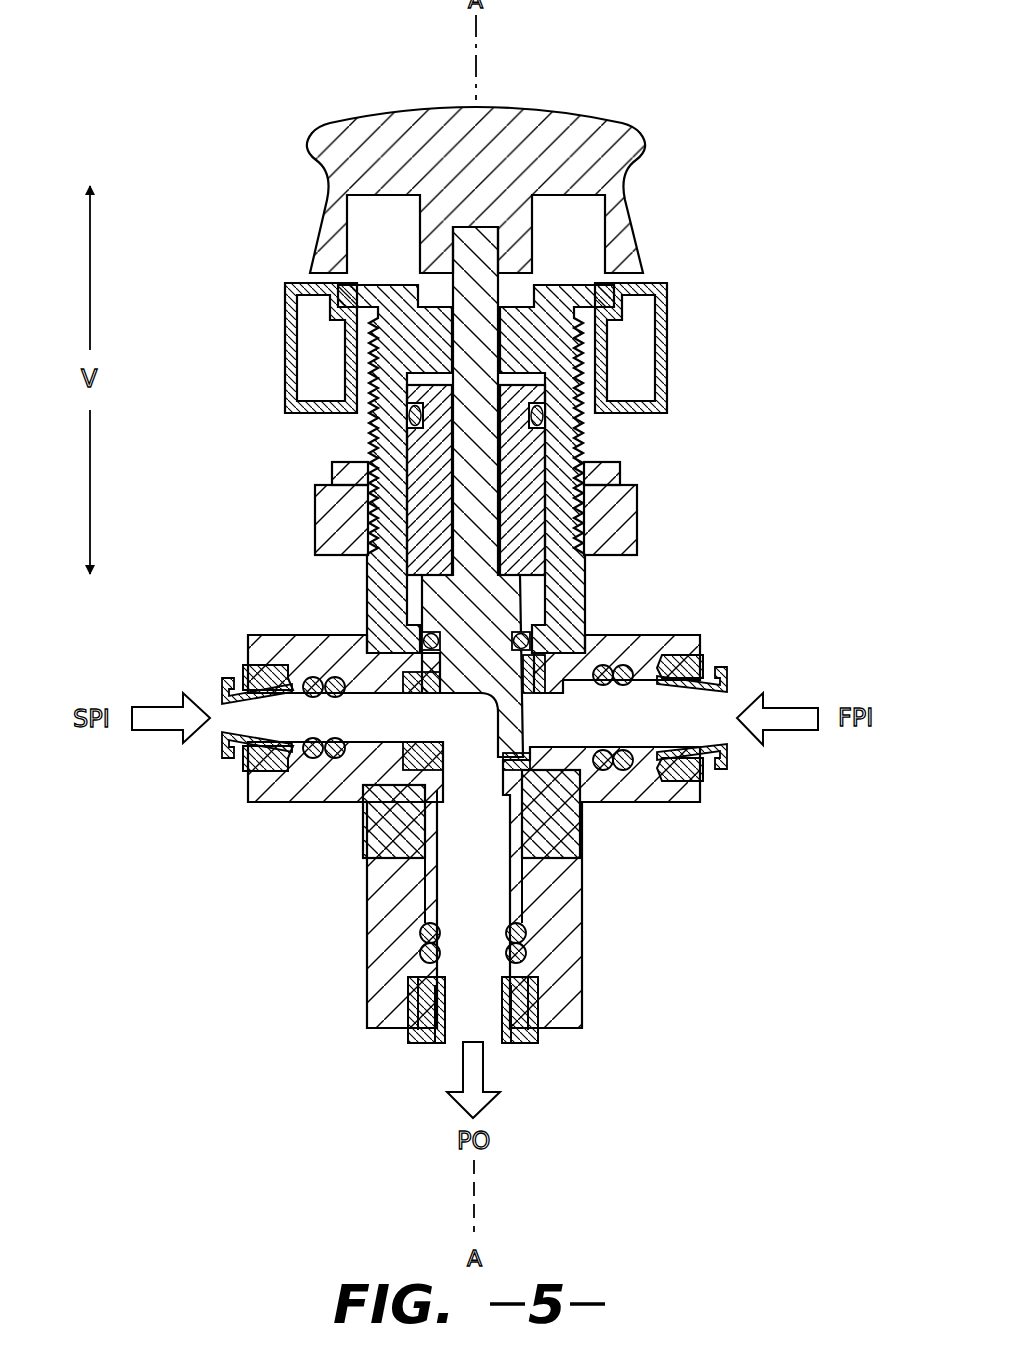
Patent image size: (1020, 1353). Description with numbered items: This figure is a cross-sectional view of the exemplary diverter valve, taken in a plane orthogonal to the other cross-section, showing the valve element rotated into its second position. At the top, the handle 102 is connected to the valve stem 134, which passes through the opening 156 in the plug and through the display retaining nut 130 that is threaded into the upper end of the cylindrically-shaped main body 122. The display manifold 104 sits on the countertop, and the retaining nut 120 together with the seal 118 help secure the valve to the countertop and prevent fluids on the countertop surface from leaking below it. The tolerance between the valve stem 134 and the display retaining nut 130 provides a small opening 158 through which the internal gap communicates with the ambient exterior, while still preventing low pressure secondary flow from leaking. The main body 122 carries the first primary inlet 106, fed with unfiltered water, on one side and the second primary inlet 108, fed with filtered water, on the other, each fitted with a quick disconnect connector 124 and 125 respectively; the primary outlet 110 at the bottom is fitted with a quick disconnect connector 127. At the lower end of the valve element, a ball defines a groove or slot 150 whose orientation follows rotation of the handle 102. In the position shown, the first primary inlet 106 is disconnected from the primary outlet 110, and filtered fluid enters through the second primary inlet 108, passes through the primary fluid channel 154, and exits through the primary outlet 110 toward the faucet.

The handle 102 is at (380, 140).
The valve stem 134 is at (470, 235).
The display manifold 104 is at (282, 355).
The display retaining nut 130 is at (577, 295).
The small opening 158 is at (441, 326).
The opening 156 is at (530, 458).
The seal 118 is at (620, 464).
The retaining nut 120 is at (622, 517).
The main body 122 is at (372, 605).
The slot 150 is at (470, 762).
The primary fluid channel 154 is at (475, 877).
The quick disconnect connector 125 is at (245, 672).
The second primary inlet 108 is at (208, 691).
The quick disconnect connector 124 is at (702, 656).
The first primary inlet 106 is at (744, 690).
The quick disconnect connector 127 is at (417, 1023).
The primary outlet 110 is at (497, 1056).